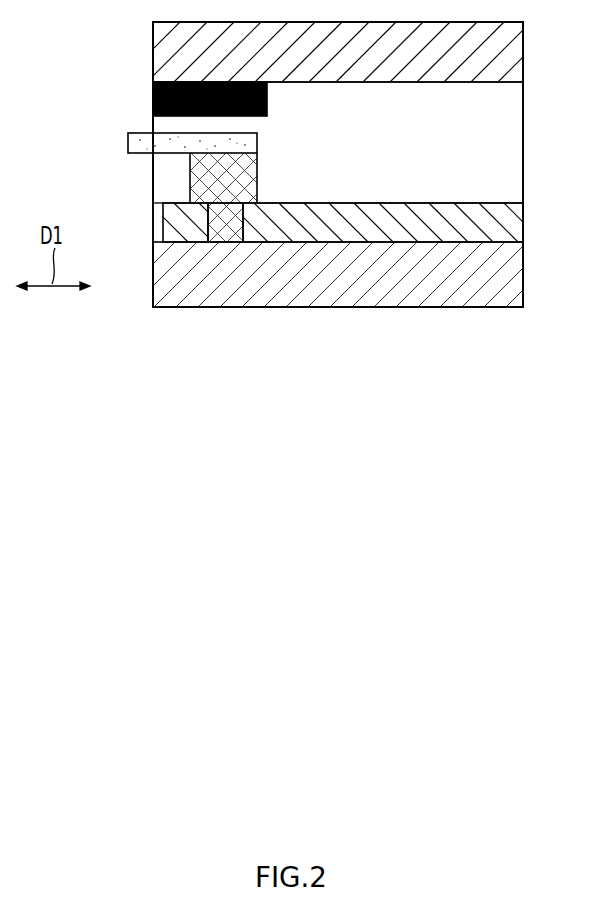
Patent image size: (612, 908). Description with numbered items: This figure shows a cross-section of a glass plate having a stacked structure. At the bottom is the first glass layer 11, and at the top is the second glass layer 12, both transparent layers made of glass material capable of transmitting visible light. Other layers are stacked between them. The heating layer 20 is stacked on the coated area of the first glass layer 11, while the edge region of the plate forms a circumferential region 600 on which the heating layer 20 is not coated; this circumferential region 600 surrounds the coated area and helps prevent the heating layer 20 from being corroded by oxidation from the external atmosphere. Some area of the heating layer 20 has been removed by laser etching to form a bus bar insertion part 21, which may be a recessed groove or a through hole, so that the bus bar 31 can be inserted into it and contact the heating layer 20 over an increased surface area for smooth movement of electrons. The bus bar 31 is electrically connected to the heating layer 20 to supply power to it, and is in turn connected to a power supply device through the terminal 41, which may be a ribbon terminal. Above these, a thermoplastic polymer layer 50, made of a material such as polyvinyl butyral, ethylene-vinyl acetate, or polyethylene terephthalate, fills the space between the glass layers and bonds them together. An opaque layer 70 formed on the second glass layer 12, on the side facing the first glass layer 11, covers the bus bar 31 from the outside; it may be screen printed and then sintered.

The first glass layer 11 is at (512, 272).
The second glass layer 12 is at (510, 53).
The heating layer 20 is at (512, 220).
The bus bar insertion part 21 is at (238, 227).
The bus bar 31 is at (193, 174).
The terminal 41 is at (127, 142).
The thermoplastic polymer layer 50 is at (510, 147).
The opaque layer 70 is at (151, 96).
The circumferential region 600 is at (152, 245).